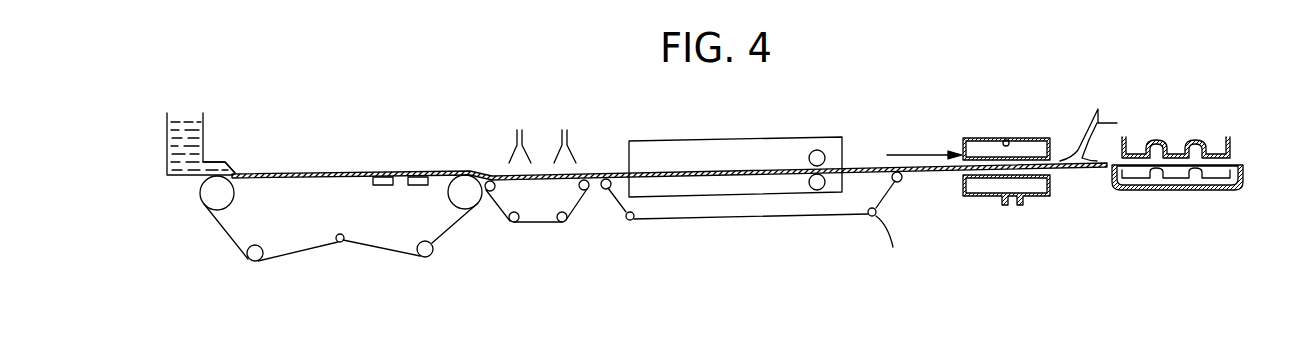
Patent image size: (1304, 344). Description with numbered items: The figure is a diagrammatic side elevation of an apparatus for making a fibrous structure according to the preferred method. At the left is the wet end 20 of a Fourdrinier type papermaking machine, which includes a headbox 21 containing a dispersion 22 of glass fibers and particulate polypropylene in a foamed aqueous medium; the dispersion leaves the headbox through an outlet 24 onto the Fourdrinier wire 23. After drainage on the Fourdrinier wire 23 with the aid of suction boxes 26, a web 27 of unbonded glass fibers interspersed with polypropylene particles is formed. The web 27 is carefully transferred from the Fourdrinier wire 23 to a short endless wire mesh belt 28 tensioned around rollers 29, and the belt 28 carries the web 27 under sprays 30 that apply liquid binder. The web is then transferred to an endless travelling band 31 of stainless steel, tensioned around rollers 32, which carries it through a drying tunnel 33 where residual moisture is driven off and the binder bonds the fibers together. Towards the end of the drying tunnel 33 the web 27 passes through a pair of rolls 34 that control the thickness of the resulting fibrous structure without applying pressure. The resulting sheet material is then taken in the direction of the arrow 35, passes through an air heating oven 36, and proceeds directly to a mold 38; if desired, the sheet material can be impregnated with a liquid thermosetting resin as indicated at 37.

The wet end of Fourdrinier type papermaking machine 20 is at (336, 244).
The headbox 21 is at (203, 138).
The dispersion 22 is at (182, 128).
The Fourdrinier wire 23 is at (269, 178).
The outlet 24 is at (218, 167).
The suction boxes 26 is at (417, 177).
The web 27 is at (462, 170).
The endless wire mesh belt 28 is at (497, 205).
The rollers 29 is at (584, 192).
The sprays 30 is at (563, 140).
The endless travelling band 31 is at (613, 210).
The rollers 32 is at (893, 182).
The drying tunnel 33 is at (670, 140).
The pair of rolls 34 is at (820, 150).
The arrow 35 is at (918, 155).
The air heating oven 36 is at (1007, 140).
The liquid thermosetting resin impregnation 37 is at (1087, 113).
The mold 38 is at (1230, 135).